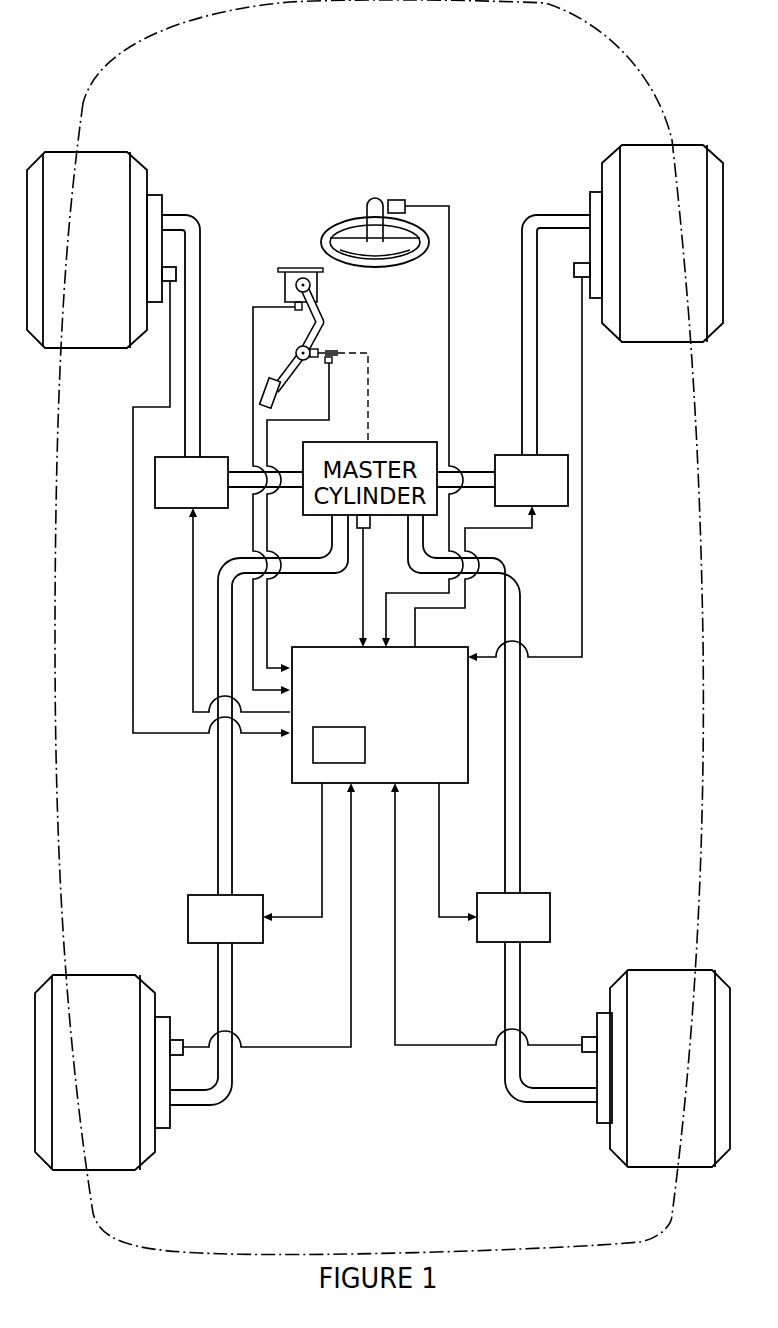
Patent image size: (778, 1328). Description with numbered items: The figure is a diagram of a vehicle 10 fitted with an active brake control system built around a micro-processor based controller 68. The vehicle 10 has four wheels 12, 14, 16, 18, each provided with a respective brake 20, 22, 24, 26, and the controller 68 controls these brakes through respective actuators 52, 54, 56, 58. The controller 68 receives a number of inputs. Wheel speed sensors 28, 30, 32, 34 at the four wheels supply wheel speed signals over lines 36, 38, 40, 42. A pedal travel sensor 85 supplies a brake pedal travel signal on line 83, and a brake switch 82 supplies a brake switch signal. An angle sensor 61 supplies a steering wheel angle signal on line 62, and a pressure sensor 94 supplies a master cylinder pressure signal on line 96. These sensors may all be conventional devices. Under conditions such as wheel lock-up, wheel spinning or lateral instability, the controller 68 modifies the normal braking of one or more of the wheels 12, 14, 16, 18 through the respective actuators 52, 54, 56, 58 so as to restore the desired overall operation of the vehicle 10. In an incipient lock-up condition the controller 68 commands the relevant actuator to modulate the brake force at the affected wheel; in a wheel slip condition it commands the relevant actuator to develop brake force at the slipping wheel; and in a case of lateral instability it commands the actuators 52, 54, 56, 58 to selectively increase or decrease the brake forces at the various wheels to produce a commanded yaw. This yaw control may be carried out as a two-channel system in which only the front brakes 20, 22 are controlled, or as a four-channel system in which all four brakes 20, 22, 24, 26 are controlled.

The vehicle 10 is at (618, 29).
The wheel 12 is at (108, 157).
The wheel 14 is at (640, 153).
The wheel 16 is at (103, 1165).
The wheel 18 is at (663, 1162).
The brake 20 is at (152, 198).
The brake 22 is at (593, 195).
The brake 24 is at (163, 1120).
The brake 26 is at (607, 1115).
The wheel speed sensor 28 is at (168, 270).
The wheel speed sensor 30 is at (580, 268).
The wheel speed sensor 32 is at (175, 1040).
The wheel speed sensor 34 is at (587, 1038).
The line 36 is at (133, 428).
The line 38 is at (585, 423).
The line 40 is at (312, 1050).
The line 42 is at (435, 1049).
The actuator 52 is at (156, 480).
The actuator 54 is at (568, 478).
The actuator 56 is at (195, 910).
The actuator 58 is at (543, 905).
The angle sensor 61 is at (392, 200).
The line 62 is at (418, 205).
The controller 68 is at (453, 775).
The brake switch 82 is at (333, 365).
The line 83 is at (252, 315).
The pedal travel sensor 85 is at (300, 312).
The pressure sensor 94 is at (370, 522).
The line 96 is at (363, 590).